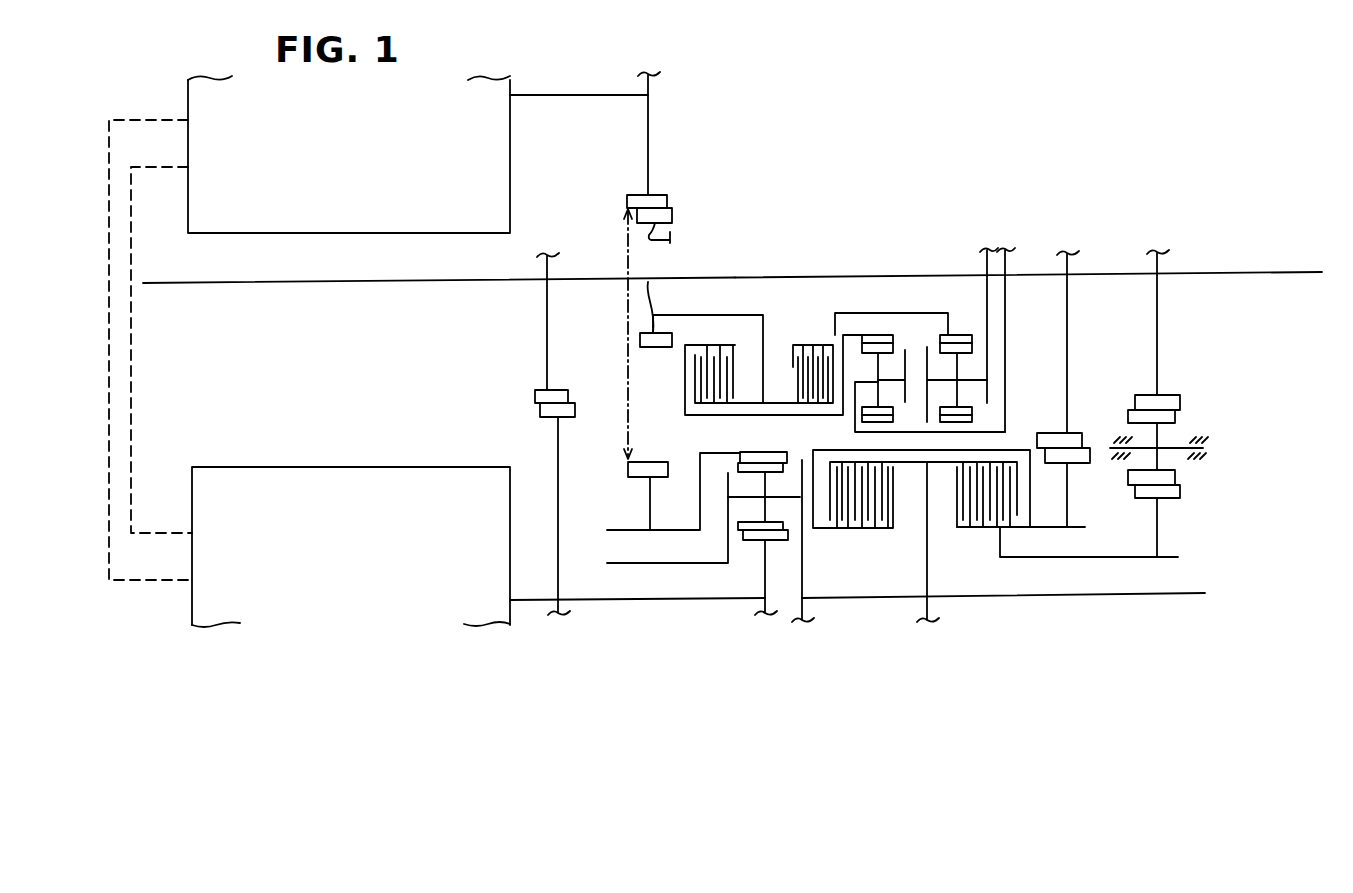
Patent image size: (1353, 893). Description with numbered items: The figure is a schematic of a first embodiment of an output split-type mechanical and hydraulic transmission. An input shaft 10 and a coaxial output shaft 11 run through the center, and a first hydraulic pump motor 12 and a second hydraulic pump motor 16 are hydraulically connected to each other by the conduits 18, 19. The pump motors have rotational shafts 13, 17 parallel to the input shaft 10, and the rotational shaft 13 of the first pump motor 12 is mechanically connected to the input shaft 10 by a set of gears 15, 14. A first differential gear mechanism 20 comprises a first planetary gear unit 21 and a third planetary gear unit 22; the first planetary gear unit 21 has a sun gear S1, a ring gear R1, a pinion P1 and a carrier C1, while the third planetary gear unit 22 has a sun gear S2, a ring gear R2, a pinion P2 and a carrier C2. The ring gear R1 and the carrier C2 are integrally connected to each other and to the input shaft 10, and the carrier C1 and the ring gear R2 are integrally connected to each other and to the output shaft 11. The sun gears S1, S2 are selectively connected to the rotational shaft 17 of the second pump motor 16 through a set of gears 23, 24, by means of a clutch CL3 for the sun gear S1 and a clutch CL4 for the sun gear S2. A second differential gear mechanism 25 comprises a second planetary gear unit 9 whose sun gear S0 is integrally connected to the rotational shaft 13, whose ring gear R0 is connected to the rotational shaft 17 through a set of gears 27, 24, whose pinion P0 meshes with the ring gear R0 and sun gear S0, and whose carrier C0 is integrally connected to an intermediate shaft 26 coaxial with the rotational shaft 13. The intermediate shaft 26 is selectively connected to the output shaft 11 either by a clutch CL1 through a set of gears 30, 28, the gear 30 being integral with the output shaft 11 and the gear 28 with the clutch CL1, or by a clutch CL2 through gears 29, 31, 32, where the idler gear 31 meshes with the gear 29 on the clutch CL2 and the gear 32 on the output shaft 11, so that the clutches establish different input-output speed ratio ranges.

The second planetary gear unit 9 is at (710, 437).
The input shaft 10 is at (378, 283).
The output shaft 11 is at (1228, 273).
The first hydraulic pump motor 12 is at (380, 467).
The rotational shaft of the first pump motor 13 is at (603, 600).
The gear 14 is at (548, 338).
The gear 15 is at (559, 500).
The second hydraulic pump motor 16 is at (510, 167).
The rotational shaft of the second pump motor 17 is at (580, 95).
The conduit 18 is at (133, 353).
The conduit 19 is at (110, 386).
The first differential gear mechanism 20 is at (914, 265).
The first planetary gear unit 21 is at (880, 325).
The third planetary gear unit 22 is at (949, 299).
The gear 23 is at (648, 327).
The gear 24 is at (650, 160).
The second differential gear mechanism 25 is at (802, 665).
The intermediate shaft 26 is at (1003, 597).
The gear 27 is at (648, 506).
The gear 28 is at (1067, 502).
The gear 29 is at (1158, 527).
The gear 30 is at (1068, 365).
The idler gear 31 is at (1160, 437).
The gear 32 is at (1158, 365).
The clutch CL1 is at (855, 528).
The clutch CL2 is at (980, 527).
The clutch CL3 is at (718, 345).
The clutch CL4 is at (810, 355).
The sun gear S0 is at (748, 563).
The sun gear S1 is at (890, 334).
The sun gear S2 is at (948, 322).
The carrier C0 is at (690, 563).
The carrier C1 is at (925, 391).
The carrier C2 is at (957, 372).
The pinion P0 is at (768, 505).
The pinion P1 is at (866, 395).
The pinion P2 is at (960, 398).
The ring gear R0 is at (735, 452).
The ring gear R1 is at (905, 433).
The ring gear R2 is at (967, 433).